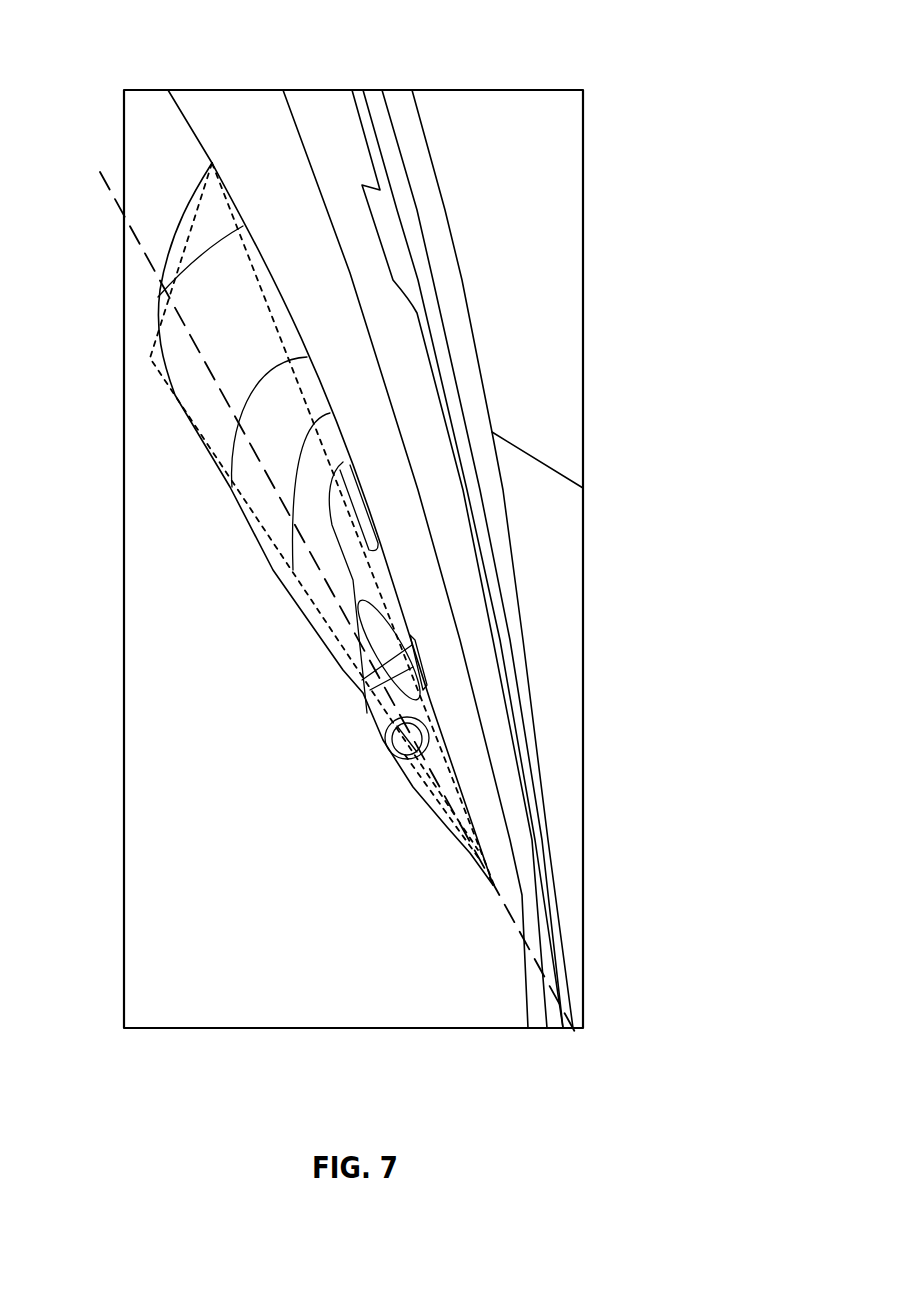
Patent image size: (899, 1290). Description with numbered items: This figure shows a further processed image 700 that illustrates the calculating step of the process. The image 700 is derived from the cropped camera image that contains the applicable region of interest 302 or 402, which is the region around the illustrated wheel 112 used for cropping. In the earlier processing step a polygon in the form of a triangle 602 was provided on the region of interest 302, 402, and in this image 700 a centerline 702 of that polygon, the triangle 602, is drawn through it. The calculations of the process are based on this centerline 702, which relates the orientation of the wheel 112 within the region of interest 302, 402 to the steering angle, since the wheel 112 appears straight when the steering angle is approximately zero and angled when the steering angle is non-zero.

The further processed image 700 is at (130, 29).
The region of interest 302 is at (568, 534).
The region of interest 402 is at (652, 75).
The centerline 702 is at (517, 928).
The triangle 602 is at (152, 348).
The wheel 112 is at (247, 478).